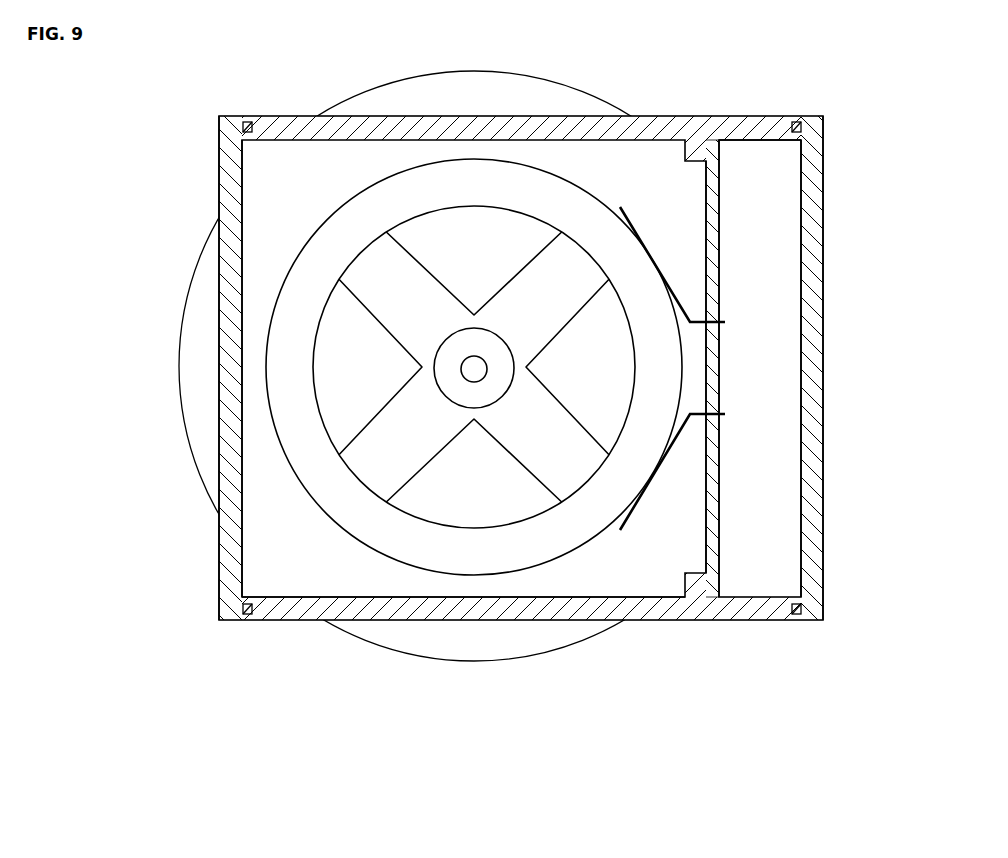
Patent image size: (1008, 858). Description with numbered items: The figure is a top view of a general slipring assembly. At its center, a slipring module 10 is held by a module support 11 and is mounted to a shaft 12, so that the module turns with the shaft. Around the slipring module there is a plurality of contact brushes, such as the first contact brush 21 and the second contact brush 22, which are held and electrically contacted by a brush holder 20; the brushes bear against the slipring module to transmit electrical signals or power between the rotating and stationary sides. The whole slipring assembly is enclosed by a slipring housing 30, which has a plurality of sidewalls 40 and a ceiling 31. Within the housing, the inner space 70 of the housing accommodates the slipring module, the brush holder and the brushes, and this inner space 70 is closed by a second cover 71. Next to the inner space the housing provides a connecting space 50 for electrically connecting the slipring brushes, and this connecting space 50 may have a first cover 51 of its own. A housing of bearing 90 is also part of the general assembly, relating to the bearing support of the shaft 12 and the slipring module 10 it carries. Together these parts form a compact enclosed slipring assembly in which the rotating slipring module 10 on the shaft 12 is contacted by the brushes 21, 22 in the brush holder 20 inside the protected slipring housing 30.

The slipring module 10 is at (474, 367).
The module support 11 is at (392, 270).
The shaft 12 is at (474, 346).
The brush holder 20 is at (711, 258).
The first contact brush 21 is at (673, 438).
The second contact brush 22 is at (674, 300).
The slipring housing 30 is at (700, 637).
The ceiling 31 is at (797, 616).
The sidewall 40 is at (675, 608).
The connecting space 50 is at (773, 365).
The first cover 51 is at (810, 525).
The inner space of housing 70 is at (517, 414).
The second cover 71 is at (232, 198).
The housing of bearing 90 is at (196, 362).